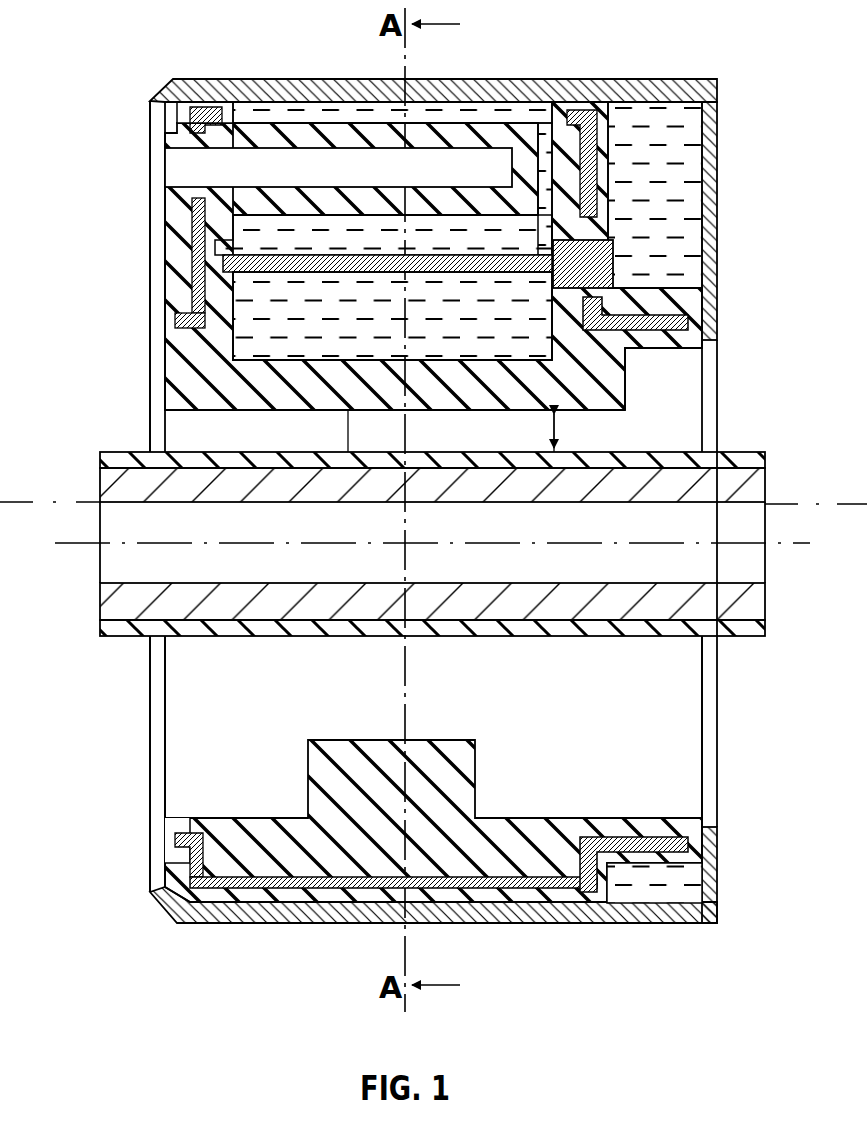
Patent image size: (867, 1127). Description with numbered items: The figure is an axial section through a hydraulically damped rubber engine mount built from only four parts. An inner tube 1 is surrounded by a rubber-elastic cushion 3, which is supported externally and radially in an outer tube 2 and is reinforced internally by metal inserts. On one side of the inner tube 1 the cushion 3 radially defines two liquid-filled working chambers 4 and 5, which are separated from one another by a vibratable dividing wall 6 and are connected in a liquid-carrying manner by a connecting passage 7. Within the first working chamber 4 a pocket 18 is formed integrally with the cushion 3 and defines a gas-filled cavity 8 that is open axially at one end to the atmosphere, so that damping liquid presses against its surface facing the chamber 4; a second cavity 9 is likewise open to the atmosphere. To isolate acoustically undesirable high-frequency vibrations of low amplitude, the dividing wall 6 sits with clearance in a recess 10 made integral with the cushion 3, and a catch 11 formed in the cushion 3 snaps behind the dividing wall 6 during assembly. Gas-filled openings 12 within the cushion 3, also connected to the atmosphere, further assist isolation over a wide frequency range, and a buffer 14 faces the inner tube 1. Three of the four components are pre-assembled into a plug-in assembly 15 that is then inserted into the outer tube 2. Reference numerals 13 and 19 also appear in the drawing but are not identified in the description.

The inner tube 1 is at (125, 603).
The outer tube 2 is at (553, 96).
The rubber-elastic cushion 3 is at (110, 462).
The first working chamber 4 is at (290, 240).
The second working chamber 5 is at (253, 312).
The dividing wall 6 is at (600, 255).
The connecting passage 7 is at (667, 127).
The cavity 8 is at (195, 166).
The second cavity 9 is at (447, 699).
The recess 10 is at (200, 262).
The catch 11 is at (626, 282).
The openings 12 is at (182, 432).
The gap width 13 is at (560, 433).
The buffer 14 is at (377, 783).
The plug-in assembly 15 is at (125, 380).
The pocket 18 is at (462, 138).
The housing bottom 19 is at (162, 902).